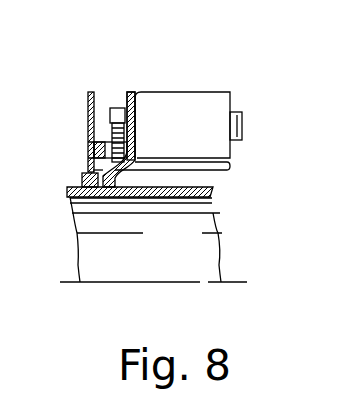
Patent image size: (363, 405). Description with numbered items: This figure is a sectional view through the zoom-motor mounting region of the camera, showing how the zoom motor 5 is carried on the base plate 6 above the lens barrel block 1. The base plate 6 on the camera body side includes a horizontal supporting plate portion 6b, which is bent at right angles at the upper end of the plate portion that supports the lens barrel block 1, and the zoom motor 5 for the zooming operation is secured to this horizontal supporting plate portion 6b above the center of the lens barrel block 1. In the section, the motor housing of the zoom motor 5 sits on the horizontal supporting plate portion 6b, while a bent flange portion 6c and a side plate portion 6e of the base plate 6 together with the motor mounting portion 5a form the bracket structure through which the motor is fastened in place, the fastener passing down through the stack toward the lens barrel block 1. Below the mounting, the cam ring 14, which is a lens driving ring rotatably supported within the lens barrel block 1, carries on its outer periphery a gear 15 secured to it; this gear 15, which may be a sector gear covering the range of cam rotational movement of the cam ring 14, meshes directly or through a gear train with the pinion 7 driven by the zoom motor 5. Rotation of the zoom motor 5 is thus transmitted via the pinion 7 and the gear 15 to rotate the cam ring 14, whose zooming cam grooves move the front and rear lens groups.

The lens barrel block 1 is at (100, 292).
The zoom motor 5 is at (195, 103).
The mounting flange of motor 5a is at (113, 118).
The base plate 6 is at (183, 122).
The horizontal supporting plate portion 6b is at (217, 170).
The vertical plate of bracket 6c is at (132, 104).
The side plate of bracket 6e is at (87, 96).
The pinion 7 is at (117, 108).
The cam ring 14 is at (143, 223).
The gear 15 is at (82, 177).